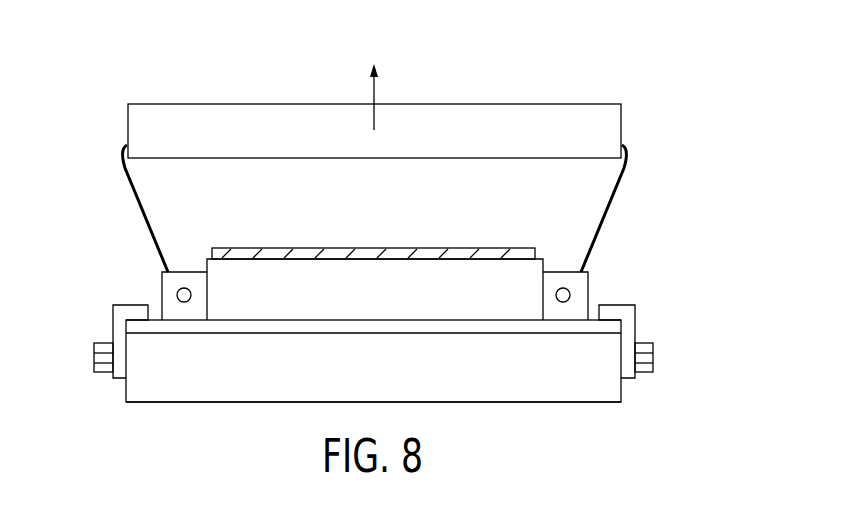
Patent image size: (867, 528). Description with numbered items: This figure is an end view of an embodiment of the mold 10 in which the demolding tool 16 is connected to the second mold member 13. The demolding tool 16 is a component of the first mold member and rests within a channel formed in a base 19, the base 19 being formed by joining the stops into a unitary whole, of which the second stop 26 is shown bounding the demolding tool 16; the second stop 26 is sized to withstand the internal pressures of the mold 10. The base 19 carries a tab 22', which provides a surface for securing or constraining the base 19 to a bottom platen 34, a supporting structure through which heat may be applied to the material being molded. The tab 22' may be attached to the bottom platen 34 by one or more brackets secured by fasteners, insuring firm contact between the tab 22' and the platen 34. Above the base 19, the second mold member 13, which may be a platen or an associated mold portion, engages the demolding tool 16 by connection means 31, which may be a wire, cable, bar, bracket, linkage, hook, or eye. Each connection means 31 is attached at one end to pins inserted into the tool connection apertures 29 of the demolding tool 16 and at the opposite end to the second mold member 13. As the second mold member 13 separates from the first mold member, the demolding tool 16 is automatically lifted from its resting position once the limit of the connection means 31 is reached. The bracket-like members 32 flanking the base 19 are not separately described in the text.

The mold 10 is at (94, 167).
The second mold member 13 is at (612, 130).
The connection means 31 is at (145, 225).
The tool connection aperture 29 is at (177, 292).
The demolding tool 16 is at (588, 300).
The clamp block 32 is at (118, 325).
The tab 22' is at (373, 361).
The second stop 26 is at (267, 290).
The base 19 is at (452, 335).
The bottom platen 34 is at (587, 390).